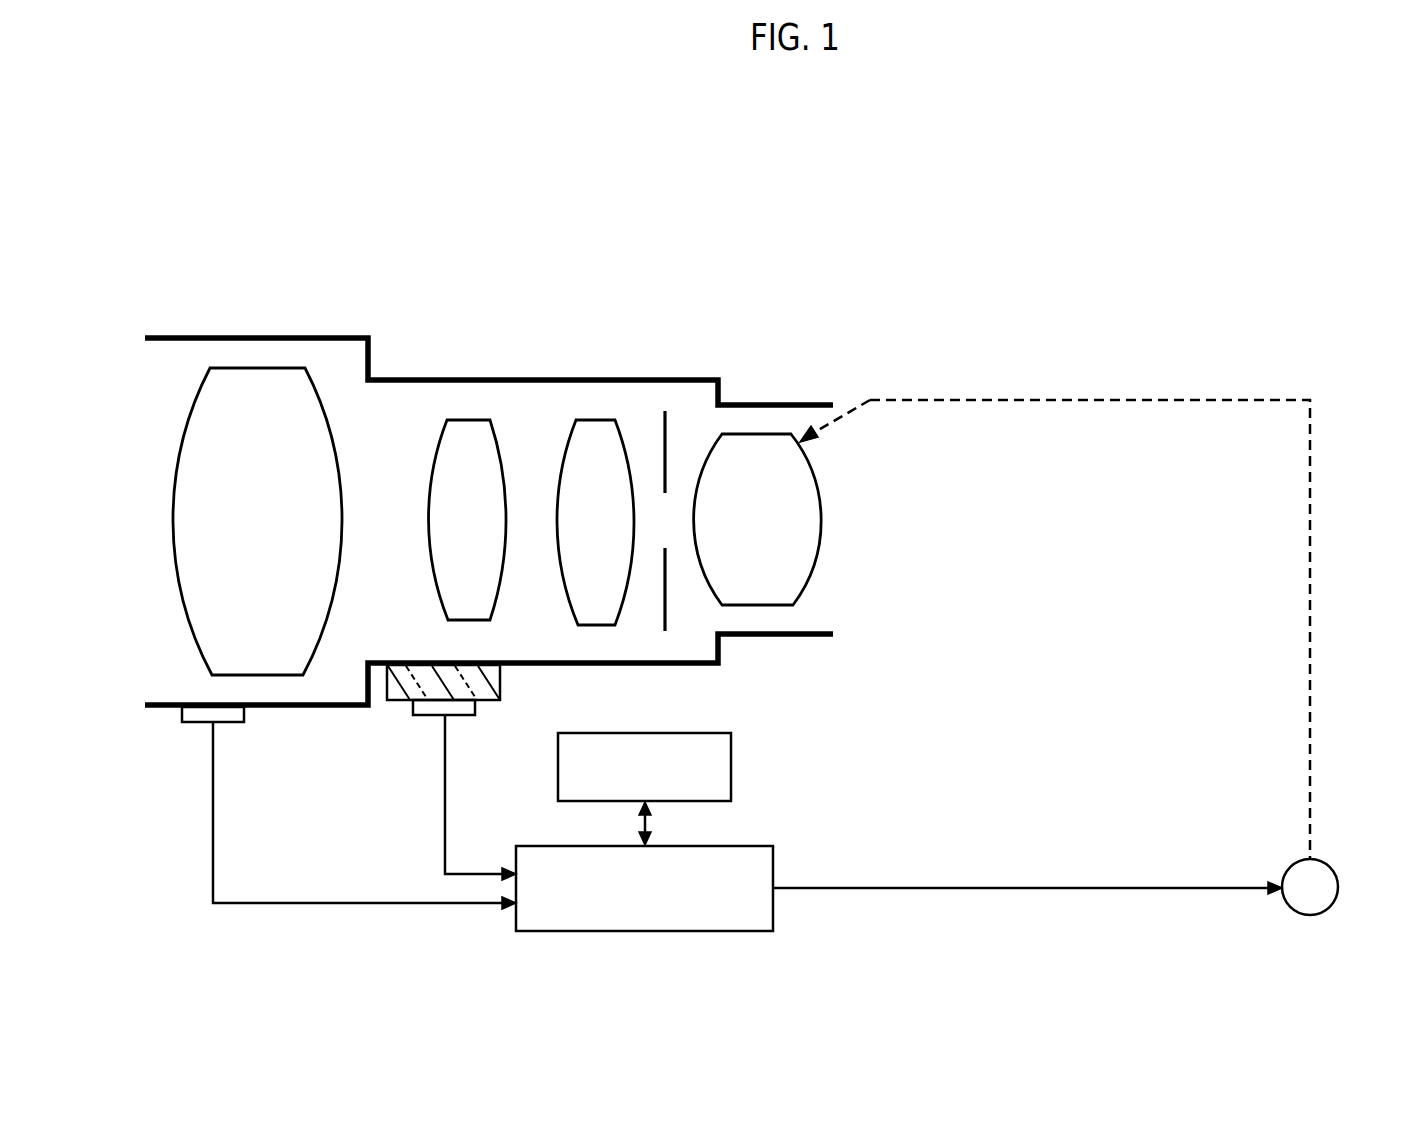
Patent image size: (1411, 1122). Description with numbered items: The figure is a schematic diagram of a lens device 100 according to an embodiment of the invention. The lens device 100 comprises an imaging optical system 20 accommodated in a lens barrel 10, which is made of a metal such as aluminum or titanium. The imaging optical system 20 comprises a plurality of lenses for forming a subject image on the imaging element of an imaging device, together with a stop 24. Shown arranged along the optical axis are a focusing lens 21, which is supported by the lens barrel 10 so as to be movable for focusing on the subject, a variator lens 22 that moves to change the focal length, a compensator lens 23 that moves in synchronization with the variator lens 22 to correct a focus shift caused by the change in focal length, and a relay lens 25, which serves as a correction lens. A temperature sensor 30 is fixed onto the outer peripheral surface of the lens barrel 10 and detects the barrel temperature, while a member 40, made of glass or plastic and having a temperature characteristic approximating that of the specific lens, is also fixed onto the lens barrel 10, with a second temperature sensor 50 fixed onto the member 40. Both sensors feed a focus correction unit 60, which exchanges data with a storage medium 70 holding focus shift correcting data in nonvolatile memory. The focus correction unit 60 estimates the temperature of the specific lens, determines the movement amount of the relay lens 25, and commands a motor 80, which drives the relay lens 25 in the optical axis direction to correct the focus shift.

The lens device 100 is at (922, 321).
The lens barrel 10 is at (165, 337).
The imaging optical system 20 is at (822, 275).
The focusing lens 21 is at (296, 368).
The variator lens 22 is at (463, 420).
The compensator lens 23 is at (600, 420).
The stop 24 is at (668, 420).
The relay lens 25 is at (776, 433).
The temperature sensor 30 is at (233, 724).
The member 40 is at (492, 702).
The temperature sensor 50 is at (459, 718).
The focus correction unit 60 is at (774, 865).
The storage medium 70 is at (733, 765).
The motor 80 is at (1332, 863).